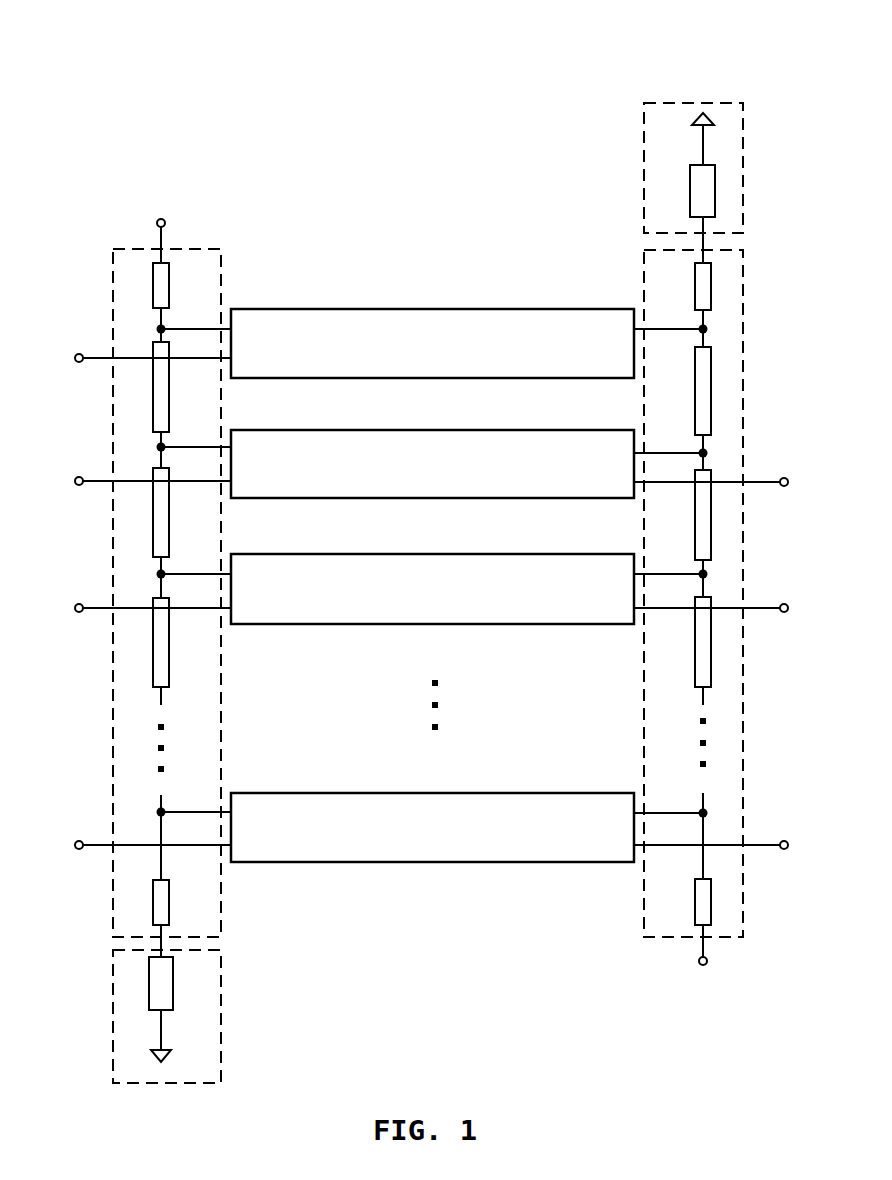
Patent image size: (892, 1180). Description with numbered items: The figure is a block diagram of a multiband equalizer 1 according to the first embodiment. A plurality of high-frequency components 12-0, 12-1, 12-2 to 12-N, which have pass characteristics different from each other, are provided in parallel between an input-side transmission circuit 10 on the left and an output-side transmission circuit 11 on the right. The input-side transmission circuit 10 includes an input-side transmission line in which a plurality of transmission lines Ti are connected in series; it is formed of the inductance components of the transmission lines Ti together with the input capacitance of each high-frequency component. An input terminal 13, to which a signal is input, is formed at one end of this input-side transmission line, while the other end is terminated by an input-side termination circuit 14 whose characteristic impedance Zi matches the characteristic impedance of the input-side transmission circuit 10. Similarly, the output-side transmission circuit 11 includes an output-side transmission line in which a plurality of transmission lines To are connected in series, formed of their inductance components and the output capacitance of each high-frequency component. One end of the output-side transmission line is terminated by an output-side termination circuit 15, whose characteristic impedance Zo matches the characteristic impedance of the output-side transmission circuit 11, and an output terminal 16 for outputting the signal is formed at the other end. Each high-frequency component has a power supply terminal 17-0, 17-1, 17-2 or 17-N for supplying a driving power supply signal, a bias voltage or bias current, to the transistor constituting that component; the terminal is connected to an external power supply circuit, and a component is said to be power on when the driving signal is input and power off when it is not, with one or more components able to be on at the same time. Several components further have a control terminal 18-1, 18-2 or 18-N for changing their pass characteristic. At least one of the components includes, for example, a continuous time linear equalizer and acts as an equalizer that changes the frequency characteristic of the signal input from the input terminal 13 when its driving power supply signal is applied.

The multiband equalizer 1 is at (227, 99).
The input-side transmission circuit 10 is at (213, 248).
The output-side transmission circuit 11 is at (643, 271).
The high-frequency component 12-0 is at (542, 309).
The high-frequency component 12-1 is at (541, 430).
The high-frequency component 12-2 is at (541, 554).
The high-frequency component 12-N is at (542, 793).
The input terminal 13 is at (160, 218).
The input-side termination circuit 14 is at (113, 1016).
The output-side termination circuit 15 is at (644, 141).
The output terminal 16 is at (704, 966).
The power supply terminal 17-0 is at (76, 353).
The power supply terminal 17-1 is at (76, 476).
The power supply terminal 17-2 is at (76, 603).
The power supply terminal 17-N is at (76, 840).
The control terminal 18-1 is at (785, 478).
The control terminal 18-2 is at (785, 604).
The control terminal 18-N is at (785, 841).
The transmission line Ti is at (153, 903).
The transmission line To is at (767, 906).
The characteristic impedance Zi is at (173, 983).
The characteristic impedance Zo is at (715, 191).